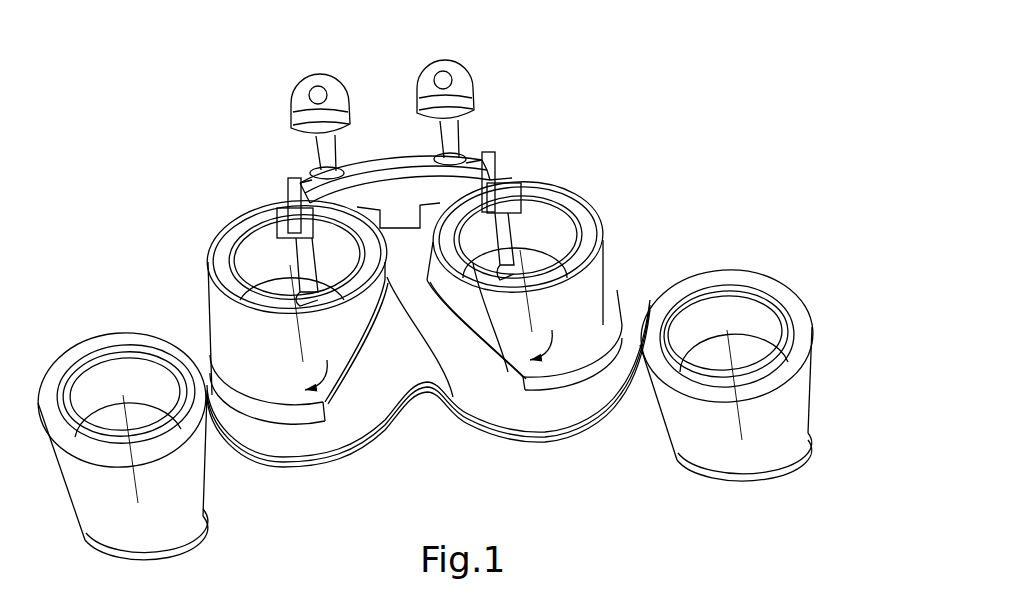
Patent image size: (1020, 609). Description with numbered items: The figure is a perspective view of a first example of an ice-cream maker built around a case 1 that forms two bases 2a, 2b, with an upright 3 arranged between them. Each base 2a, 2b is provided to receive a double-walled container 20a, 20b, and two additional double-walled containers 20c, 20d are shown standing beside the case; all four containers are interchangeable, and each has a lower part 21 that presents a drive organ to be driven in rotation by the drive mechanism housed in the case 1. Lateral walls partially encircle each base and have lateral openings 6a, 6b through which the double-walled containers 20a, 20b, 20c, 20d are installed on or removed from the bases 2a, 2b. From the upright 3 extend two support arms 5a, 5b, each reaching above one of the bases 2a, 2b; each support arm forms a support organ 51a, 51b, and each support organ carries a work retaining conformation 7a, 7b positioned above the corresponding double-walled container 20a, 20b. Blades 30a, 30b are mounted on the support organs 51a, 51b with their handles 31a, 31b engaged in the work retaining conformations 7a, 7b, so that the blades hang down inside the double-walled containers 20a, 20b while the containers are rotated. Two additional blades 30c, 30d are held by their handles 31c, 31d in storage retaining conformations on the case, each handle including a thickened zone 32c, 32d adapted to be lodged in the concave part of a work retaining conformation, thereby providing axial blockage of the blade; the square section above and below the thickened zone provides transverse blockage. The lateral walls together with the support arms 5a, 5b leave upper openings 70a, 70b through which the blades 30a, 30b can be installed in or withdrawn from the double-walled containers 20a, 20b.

The case 1 is at (423, 410).
The base 2a is at (283, 405).
The base 2b is at (570, 367).
The upright 3 is at (410, 250).
The support arm 5a is at (328, 197).
The support arm 5b is at (463, 178).
The lateral opening 6a is at (230, 367).
The lateral opening 6b is at (615, 322).
The work retaining conformation 7a is at (267, 214).
The work retaining conformation 7b is at (524, 190).
The double-walled container 20a is at (265, 341).
The double-walled container 20b is at (553, 310).
The additional double-walled container 20c is at (167, 477).
The additional double-walled container 20d is at (783, 412).
The lower part 21 is at (95, 548).
The blade 30a is at (285, 288).
The blade 30b is at (540, 253).
The additional blade 30c is at (356, 98).
The additional blade 30d is at (477, 78).
The handle 31a is at (310, 250).
The handle 31b is at (510, 238).
The handle 31c is at (330, 165).
The handle 31d is at (455, 150).
The thickened zone 32c is at (318, 170).
The thickened zone 32d is at (470, 147).
The support organ 51a is at (300, 230).
The support organ 51b is at (497, 177).
The upper opening 70a is at (272, 169).
The upper opening 70b is at (522, 150).